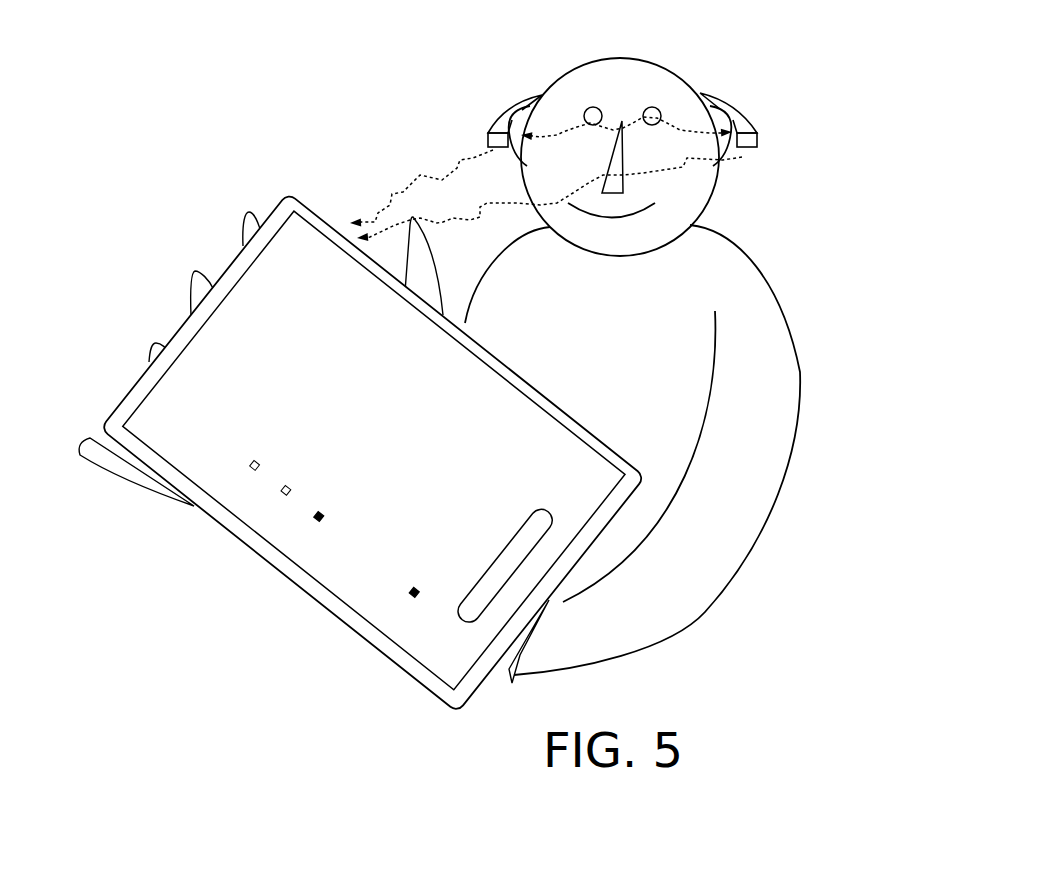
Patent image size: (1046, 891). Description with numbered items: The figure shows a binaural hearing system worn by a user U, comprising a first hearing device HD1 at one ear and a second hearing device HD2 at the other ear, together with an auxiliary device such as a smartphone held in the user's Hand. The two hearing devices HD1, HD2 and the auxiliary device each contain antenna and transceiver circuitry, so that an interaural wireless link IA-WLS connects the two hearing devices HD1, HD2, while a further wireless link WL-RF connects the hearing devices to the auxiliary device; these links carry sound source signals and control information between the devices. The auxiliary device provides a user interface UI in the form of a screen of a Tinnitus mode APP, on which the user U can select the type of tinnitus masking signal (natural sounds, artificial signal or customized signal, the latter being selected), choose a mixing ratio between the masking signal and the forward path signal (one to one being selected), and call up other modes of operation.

The user U is at (683, 73).
The first hearing device HD1 is at (528, 93).
The second hearing device HD2 is at (735, 100).
The interaural wireless link IA-WLS is at (560, 133).
The wireless link between auxiliary device and hearing devices WL-RF is at (457, 220).
The hand Hand is at (128, 477).
The user interface UI is at (282, 582).